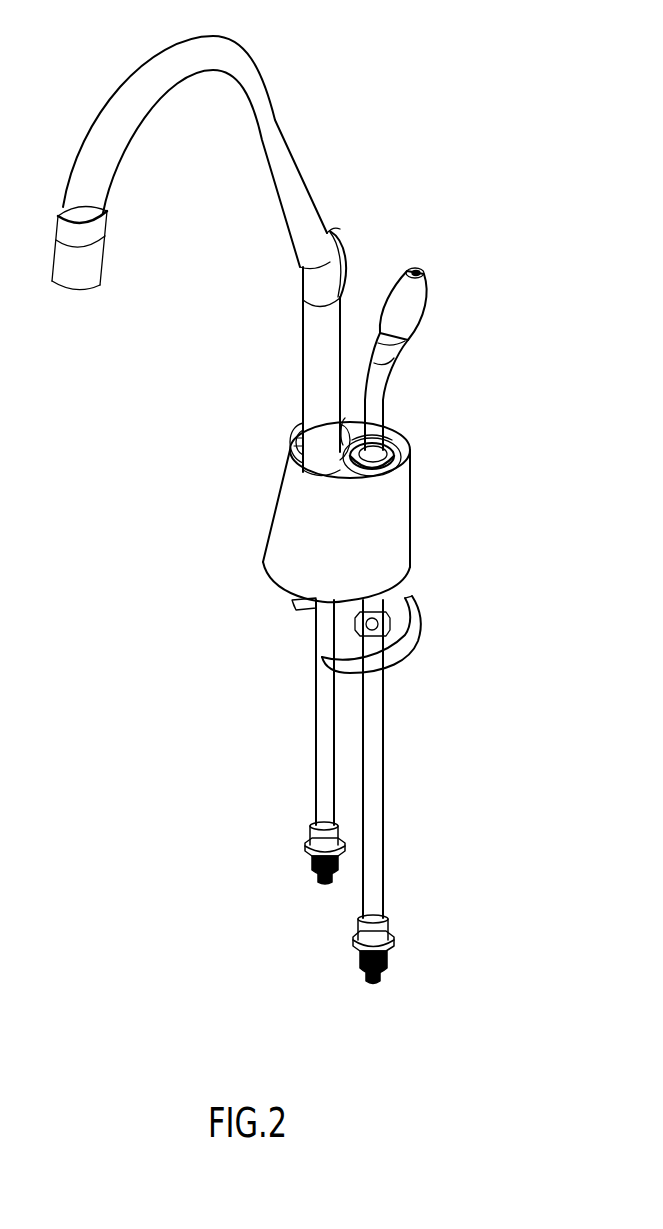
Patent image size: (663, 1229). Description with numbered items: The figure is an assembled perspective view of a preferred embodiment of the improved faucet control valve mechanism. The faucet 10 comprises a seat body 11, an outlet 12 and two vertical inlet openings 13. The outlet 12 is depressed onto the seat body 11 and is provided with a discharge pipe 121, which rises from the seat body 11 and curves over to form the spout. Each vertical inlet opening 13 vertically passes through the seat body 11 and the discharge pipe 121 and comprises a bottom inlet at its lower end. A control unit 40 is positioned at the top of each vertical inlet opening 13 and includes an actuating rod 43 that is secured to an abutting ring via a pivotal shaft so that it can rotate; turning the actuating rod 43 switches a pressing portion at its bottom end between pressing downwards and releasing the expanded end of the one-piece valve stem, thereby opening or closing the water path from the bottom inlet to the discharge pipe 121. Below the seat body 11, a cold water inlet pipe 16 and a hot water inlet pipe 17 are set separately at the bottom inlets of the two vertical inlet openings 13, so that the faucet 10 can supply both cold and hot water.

The faucet 10 is at (492, 96).
The seat body 11 is at (268, 512).
The outlet 12 is at (290, 438).
The discharge pipe 121 is at (302, 384).
The vertical inlet opening 13 is at (345, 418).
The cold water inlet pipe 16 is at (385, 703).
The hot water inlet pipe 17 is at (317, 642).
The control unit 40 is at (368, 245).
The actuating rod 43 is at (338, 229).